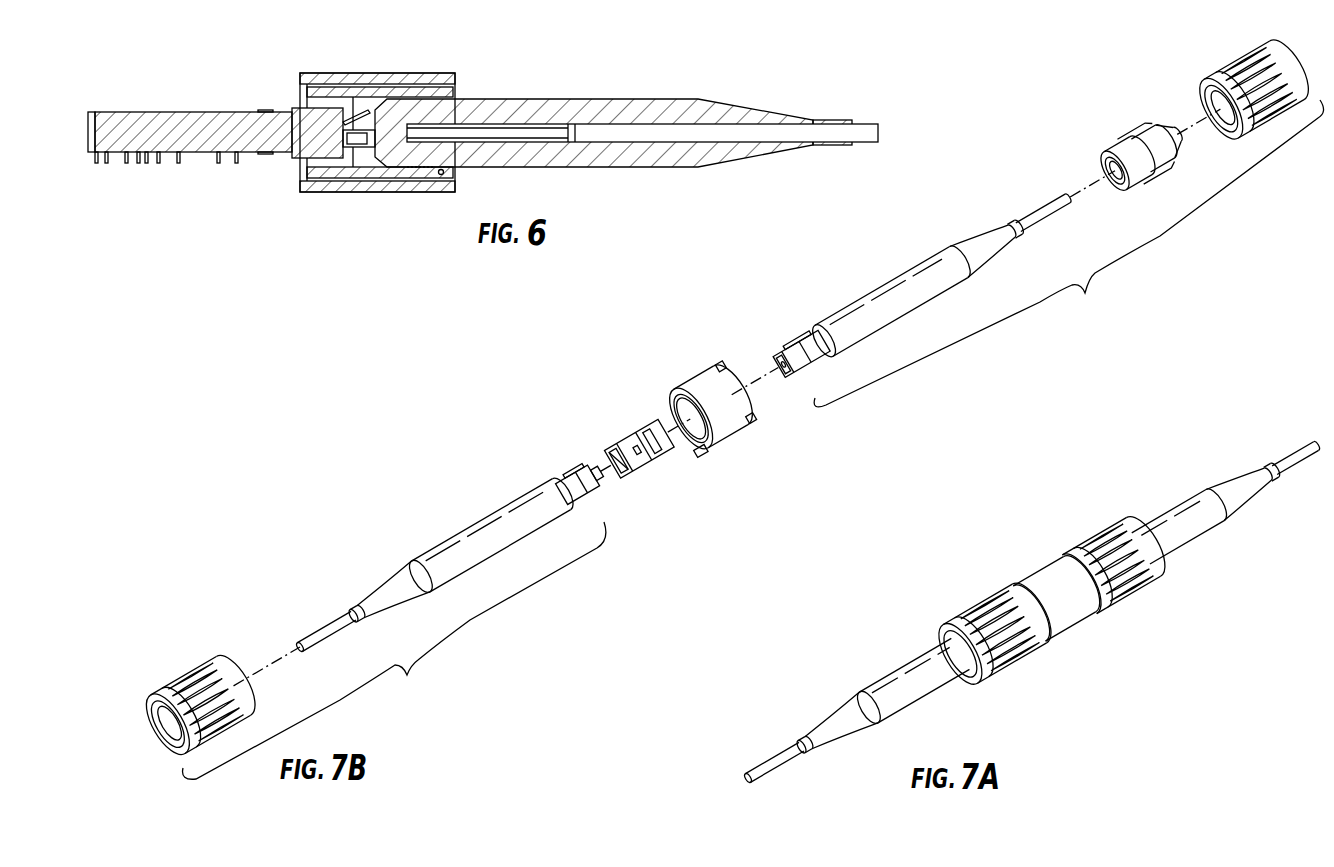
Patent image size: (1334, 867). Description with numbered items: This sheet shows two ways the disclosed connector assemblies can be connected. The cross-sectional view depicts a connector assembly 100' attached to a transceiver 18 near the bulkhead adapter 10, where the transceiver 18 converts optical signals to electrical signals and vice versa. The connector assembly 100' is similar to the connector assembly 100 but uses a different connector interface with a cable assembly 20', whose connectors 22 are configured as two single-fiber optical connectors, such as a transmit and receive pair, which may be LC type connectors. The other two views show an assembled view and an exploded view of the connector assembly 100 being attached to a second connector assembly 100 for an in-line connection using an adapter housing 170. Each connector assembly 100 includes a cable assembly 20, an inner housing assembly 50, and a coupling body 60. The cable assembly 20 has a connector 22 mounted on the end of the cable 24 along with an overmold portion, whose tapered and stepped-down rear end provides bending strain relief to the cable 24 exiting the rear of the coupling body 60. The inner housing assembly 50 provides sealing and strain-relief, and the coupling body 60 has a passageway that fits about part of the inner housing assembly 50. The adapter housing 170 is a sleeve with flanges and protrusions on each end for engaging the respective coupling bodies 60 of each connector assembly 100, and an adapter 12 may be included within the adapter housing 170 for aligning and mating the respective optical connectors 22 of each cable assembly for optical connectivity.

In FIG. 6, the bulkhead adapter 10 is at (305, 72).
In FIG. 7B, the adapter 12 is at (625, 433).
In FIG. 6, the transceiver 18 is at (210, 146).
In FIG. 7A, the cable assembly 20 is at (1026, 588).
In FIG. 7B, the cable assembly 20 is at (681, 419).
In FIG. 6, the connector 22 is at (360, 128).
In FIG. 7B, the connector 22 is at (570, 478).
In FIG. 7A, the cable 24 is at (777, 757).
In FIG. 7B, the cable 24 is at (1042, 213).
In FIG. 7B, the inner housing assembly 50 is at (1125, 135).
In FIG. 7A, the coupling body 60 is at (982, 606).
In FIG. 7B, the coupling body 60 is at (217, 664).
In FIG. 7A, the connector assembly 100 is at (997, 491).
In FIG. 7B, the connector assembly 100 is at (753, 439).
In FIG. 6, the connector assembly 100' is at (672, 48).
In FIG. 6, the cable assembly 20' is at (626, 152).
In FIG. 7A, the adapter housing 170 is at (1032, 590).
In FIG. 7B, the adapter housing 170 is at (690, 385).